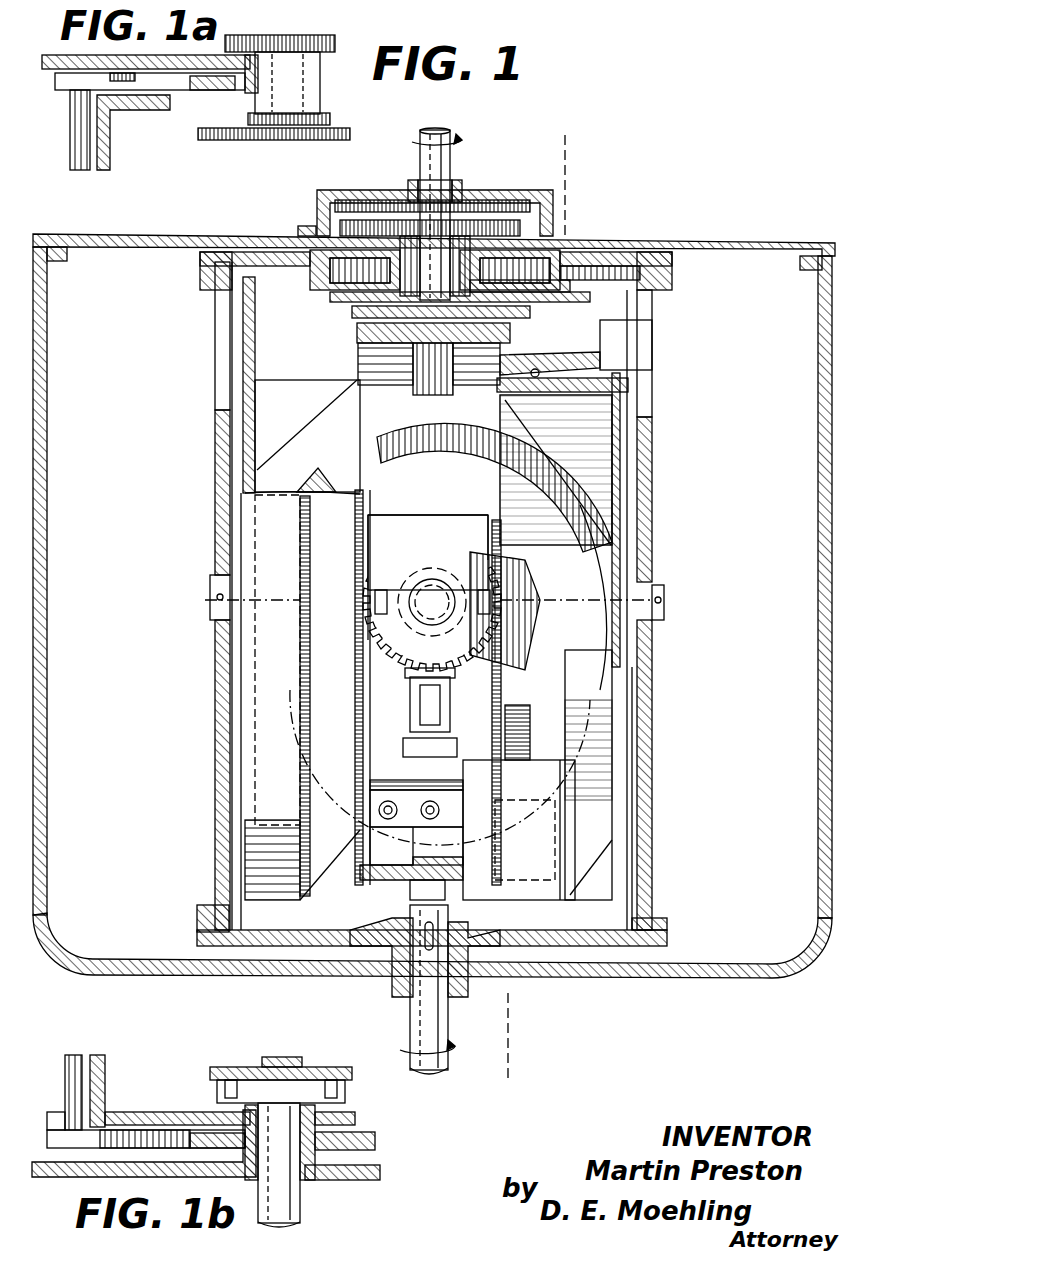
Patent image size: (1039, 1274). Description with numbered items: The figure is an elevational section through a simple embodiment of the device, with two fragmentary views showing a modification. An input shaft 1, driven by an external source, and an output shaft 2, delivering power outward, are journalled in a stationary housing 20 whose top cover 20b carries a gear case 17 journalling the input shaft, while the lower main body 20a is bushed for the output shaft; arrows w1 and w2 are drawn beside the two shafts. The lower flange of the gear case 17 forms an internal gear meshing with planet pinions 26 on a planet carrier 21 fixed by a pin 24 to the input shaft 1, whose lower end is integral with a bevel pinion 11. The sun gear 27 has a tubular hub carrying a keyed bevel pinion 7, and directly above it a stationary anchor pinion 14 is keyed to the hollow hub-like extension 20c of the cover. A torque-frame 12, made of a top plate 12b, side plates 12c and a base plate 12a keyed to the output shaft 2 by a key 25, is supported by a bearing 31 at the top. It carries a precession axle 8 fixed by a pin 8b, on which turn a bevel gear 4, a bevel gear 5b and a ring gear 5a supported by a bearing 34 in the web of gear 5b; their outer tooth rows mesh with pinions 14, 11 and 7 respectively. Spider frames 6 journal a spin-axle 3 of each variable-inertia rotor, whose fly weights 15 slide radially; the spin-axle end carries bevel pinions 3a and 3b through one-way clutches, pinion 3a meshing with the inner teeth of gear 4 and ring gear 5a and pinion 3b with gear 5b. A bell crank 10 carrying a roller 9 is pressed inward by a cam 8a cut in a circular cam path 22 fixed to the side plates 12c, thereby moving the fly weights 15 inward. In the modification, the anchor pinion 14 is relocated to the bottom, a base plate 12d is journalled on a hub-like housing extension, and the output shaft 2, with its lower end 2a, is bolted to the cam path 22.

In FIG. 1, the input shaft 1 is at (452, 136).
In FIG. 1, the output shaft 2 is at (425, 1003).
In FIG. 1B, the output shaft end 2a is at (282, 1203).
In FIG. 1, the spin-axle 3 is at (125, 593).
In FIG. 1, the bevel pinion 3a is at (462, 538).
In FIG. 1, the bevel pinion 3b is at (495, 560).
In FIG. 1, the bevel gear 4 is at (247, 410).
In FIG. 1A, the bevel gear 4 is at (110, 158).
In FIG. 1B, the bevel gear 4 is at (105, 1068).
In FIG. 1, the ring gear 5a is at (598, 360).
In FIG. 1, the bevel gear 5b is at (605, 395).
In FIG. 1, the spider frames 6 is at (411, 824).
In FIG. 1, the bevel pinion 7 is at (372, 299).
In FIG. 1A, the bevel pinion 7 is at (330, 118).
In FIG. 1, the precession axle 8 is at (656, 600).
In FIG. 1, the cam 8a is at (420, 356).
In FIG. 1B, the cam 8a is at (287, 1057).
In FIG. 1, the pin 8b is at (214, 602).
In FIG. 1, the roller 9 is at (410, 706).
In FIG. 1, the bell crank 10 is at (406, 676).
In FIG. 1, the bevel pinion 11 is at (352, 312).
In FIG. 1A, the bevel pinion 11 is at (210, 140).
In FIG. 1, the torque-frame 12 is at (210, 812).
In FIG. 1, the base plate 12a is at (607, 940).
In FIG. 1B, the base plate 12a is at (146, 1139).
In FIG. 1, the top plate 12b is at (600, 262).
In FIG. 1A, the top plate 12b is at (172, 92).
In FIG. 1, the side plates 12c is at (222, 712).
In FIG. 1A, the side plates 12c is at (80, 158).
In FIG. 1B, the side plates 12c is at (68, 1092).
In FIG. 1B, the base plate 12d is at (372, 1145).
In FIG. 1, the anchor pinion 14 is at (570, 287).
In FIG. 1B, the anchor pinion 14 is at (175, 1115).
In FIG. 1, the fly weights 15 is at (492, 440).
In FIG. 1, the gear case 17 is at (555, 212).
In FIG. 1, the housing 20 is at (745, 978).
In FIG. 1B, the housing 20 is at (144, 1143).
In FIG. 1, the lower main body 20a is at (47, 762).
In FIG. 1, the top cover 20b is at (770, 246).
In FIG. 1A, the top cover 20b is at (50, 70).
In FIG. 1, the hub-like extension 20c is at (305, 236).
In FIG. 1, the planet carrier 21 is at (395, 205).
In FIG. 1, the cam path 22 is at (357, 329).
In FIG. 1B, the cam path 22 is at (225, 1066).
In FIG. 1, the pin 24 is at (468, 205).
In FIG. 1, the key 25 is at (392, 950).
In FIG. 1, the planet pinions 26 is at (318, 254).
In FIG. 1, the sun gear 27 is at (365, 225).
In FIG. 1A, the sun gear 27 is at (258, 36).
In FIG. 1, the bearing 31 is at (562, 274).
In FIG. 1, the bearing 34 is at (600, 375).
In FIG. 1, the input angular velocity w1 is at (490, 155).
In FIG. 1, the output angular velocity w2 is at (492, 1050).